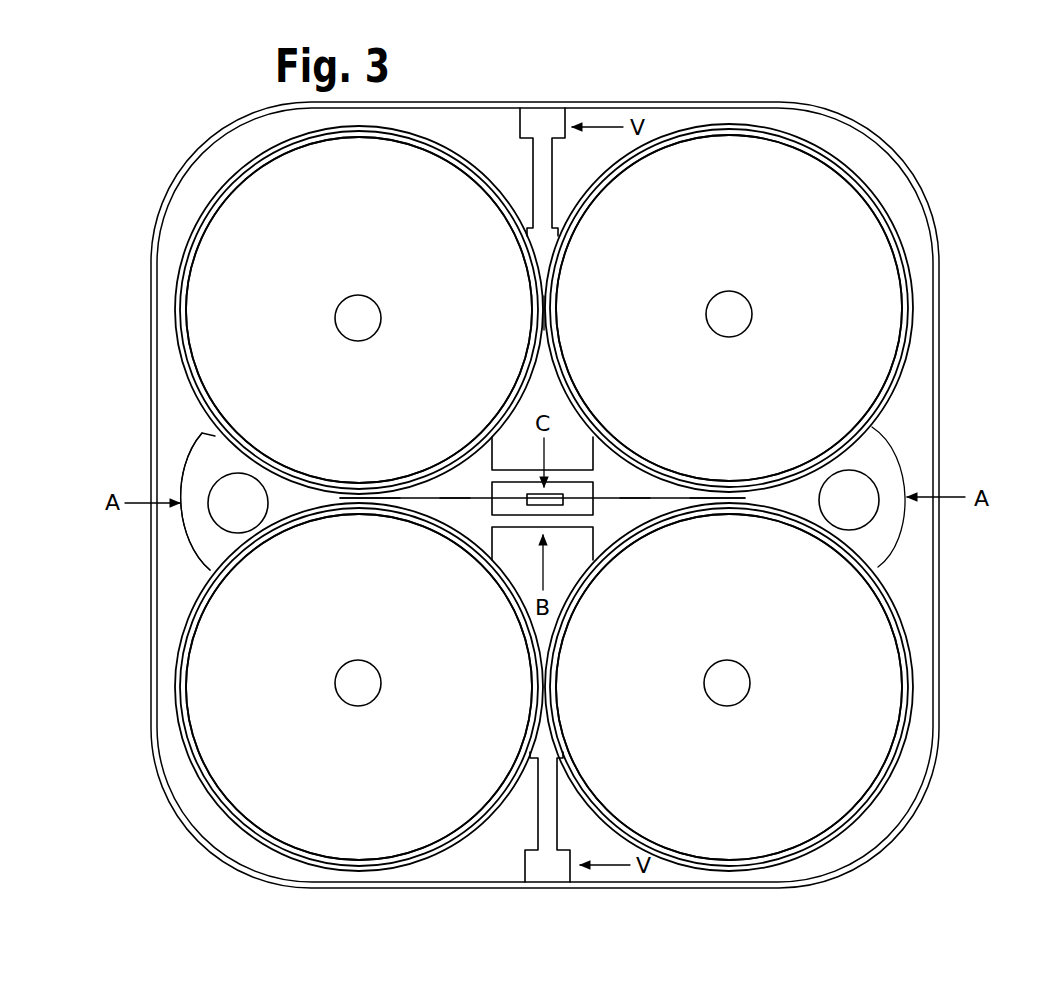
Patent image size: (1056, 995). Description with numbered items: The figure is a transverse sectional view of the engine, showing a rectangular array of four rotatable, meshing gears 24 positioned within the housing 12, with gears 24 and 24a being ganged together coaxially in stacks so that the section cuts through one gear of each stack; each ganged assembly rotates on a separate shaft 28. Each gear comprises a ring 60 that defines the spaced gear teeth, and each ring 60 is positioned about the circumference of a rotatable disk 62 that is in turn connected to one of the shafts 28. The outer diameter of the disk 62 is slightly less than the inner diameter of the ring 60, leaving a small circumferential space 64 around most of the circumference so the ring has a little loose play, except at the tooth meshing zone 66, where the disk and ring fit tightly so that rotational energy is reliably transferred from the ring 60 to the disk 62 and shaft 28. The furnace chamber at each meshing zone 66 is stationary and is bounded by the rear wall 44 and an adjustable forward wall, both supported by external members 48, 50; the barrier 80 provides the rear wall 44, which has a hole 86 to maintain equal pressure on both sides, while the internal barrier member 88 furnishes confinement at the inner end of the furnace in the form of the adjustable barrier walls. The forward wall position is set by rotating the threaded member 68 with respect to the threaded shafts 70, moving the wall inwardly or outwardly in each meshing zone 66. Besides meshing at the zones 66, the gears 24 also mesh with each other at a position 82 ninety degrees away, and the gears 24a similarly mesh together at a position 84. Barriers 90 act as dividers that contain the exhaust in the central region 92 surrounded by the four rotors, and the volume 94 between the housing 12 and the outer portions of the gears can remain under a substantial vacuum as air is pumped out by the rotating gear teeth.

The housing 12 is at (940, 320).
The gears 24 is at (268, 148).
The gears 24a is at (225, 815).
The shafts 28 is at (335, 683).
The rear wall 44 is at (197, 472).
The external member 48 is at (600, 457).
The external member 50 is at (890, 437).
The ring 60 is at (443, 148).
The rotatable disk 62 is at (370, 259).
The circumferential space 64 is at (760, 140).
The tooth meshing zone 66 is at (350, 495).
The threaded member 68 is at (545, 494).
The threaded shafts 70 is at (435, 497).
The barrier 80 is at (183, 518).
The position 82 is at (553, 313).
The position 84 is at (537, 681).
The hole 86 is at (220, 505).
The internal barrier member 88 is at (467, 485).
The barriers 90 is at (555, 178).
The central region 92 is at (518, 555).
The volume 94 is at (172, 392).